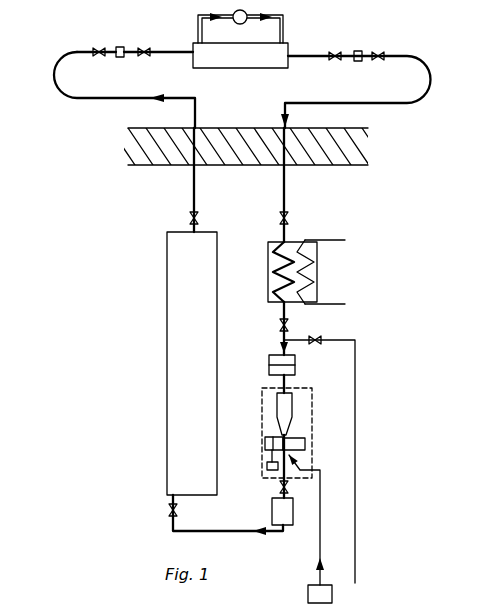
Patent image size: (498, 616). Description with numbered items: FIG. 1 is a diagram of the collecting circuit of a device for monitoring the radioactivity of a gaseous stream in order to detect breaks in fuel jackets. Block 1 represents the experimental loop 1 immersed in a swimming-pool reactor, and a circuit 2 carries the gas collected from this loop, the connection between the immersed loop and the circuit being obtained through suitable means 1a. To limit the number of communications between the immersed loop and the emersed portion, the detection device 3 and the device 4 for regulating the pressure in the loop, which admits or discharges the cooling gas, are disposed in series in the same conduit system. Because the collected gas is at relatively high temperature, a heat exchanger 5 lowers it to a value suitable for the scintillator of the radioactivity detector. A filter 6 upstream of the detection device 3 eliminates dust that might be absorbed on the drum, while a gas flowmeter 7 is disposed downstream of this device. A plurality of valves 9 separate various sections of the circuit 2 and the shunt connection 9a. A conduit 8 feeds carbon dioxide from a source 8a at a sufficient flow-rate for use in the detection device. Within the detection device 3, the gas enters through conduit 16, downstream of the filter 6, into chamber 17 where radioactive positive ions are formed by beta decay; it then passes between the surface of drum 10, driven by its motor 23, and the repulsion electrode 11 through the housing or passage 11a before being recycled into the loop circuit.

The experimental loop 1 is at (258, 69).
The connection means 1a is at (120, 57).
The circuit 2 is at (432, 82).
The detection device 3 is at (313, 420).
The pressure regulating device 4 is at (172, 376).
The heat exchanger 5 is at (318, 266).
The filter 6 is at (296, 368).
The gas flowmeter 7 is at (286, 527).
The conduit 8 is at (322, 547).
The source 8a is at (307, 595).
The valves 9 is at (142, 47).
The shunt connection 9a is at (357, 483).
The drum 10 is at (265, 442).
The repulsion electrode 11 is at (306, 444).
The housing 11a is at (285, 440).
The conduit 16 is at (286, 386).
The chamber 17 is at (277, 410).
The motor 23 is at (268, 470).